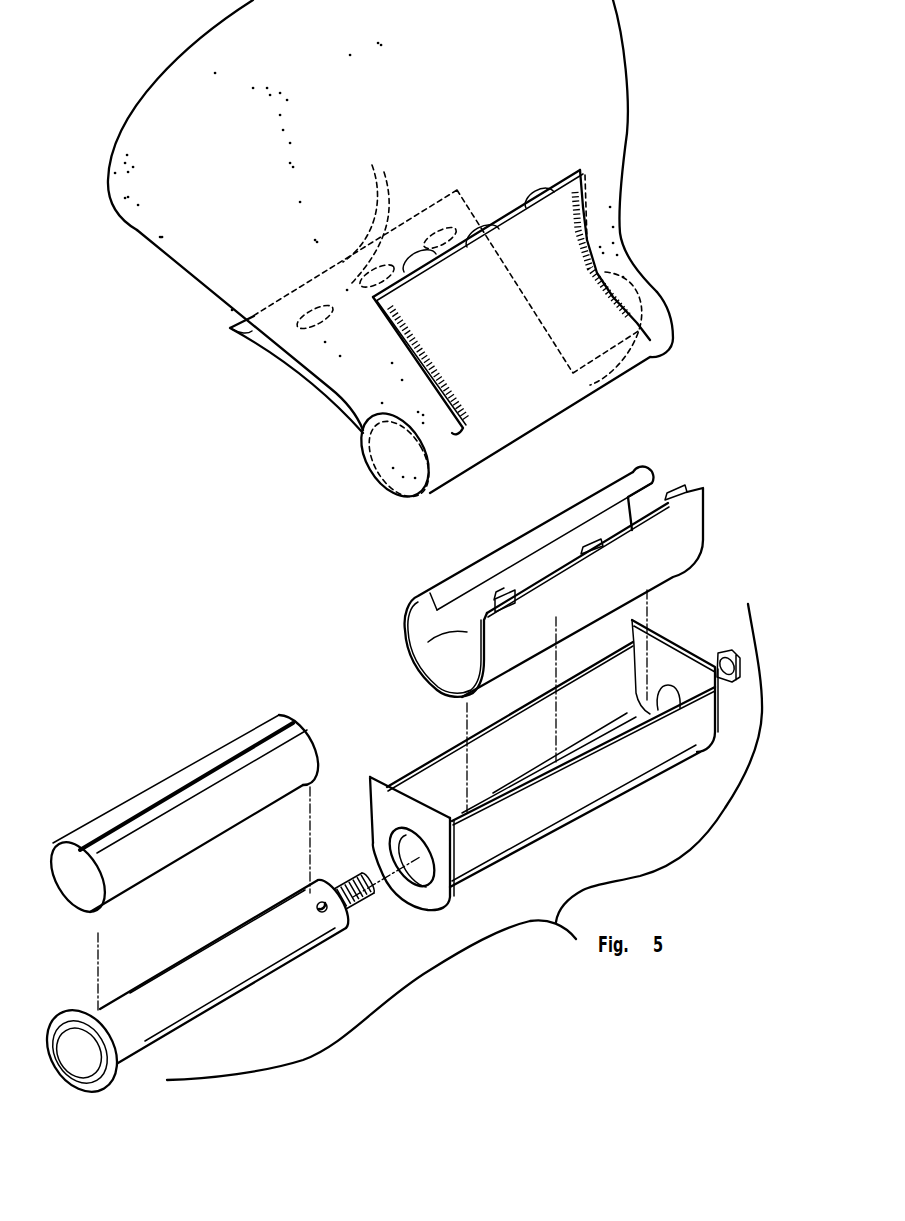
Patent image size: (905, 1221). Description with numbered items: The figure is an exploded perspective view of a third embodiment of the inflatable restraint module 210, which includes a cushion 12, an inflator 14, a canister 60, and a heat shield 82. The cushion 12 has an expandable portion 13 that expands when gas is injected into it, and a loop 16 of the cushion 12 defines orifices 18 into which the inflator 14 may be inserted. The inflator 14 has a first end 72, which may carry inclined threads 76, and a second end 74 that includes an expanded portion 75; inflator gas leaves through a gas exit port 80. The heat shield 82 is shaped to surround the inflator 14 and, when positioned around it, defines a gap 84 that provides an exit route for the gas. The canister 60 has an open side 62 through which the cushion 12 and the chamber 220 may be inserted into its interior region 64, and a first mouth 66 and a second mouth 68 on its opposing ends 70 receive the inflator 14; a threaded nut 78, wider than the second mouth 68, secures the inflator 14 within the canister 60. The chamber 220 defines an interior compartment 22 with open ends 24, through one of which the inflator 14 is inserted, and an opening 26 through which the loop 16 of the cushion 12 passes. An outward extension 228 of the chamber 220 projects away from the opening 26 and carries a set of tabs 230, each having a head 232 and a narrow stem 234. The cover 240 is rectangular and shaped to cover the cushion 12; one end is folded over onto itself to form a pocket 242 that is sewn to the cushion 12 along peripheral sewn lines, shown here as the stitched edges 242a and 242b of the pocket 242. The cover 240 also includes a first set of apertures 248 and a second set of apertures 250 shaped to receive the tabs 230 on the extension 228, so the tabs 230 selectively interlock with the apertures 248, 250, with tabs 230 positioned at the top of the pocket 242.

The cushion 12 is at (150, 134).
The expandable portion 13 is at (207, 263).
The inflator 14 is at (184, 976).
The loop 16 is at (674, 343).
The orifices 18 is at (397, 452).
The interior compartment 22 is at (410, 653).
The open ends 24 is at (446, 679).
The opening 26 is at (470, 600).
The canister 60 is at (581, 801).
The open side 62 is at (623, 727).
The interior region 64 is at (477, 822).
The first mouth 66 is at (370, 808).
The second mouth 68 is at (669, 690).
The opposing ends 70 is at (717, 710).
The first end 72 is at (383, 898).
The second end 74 is at (68, 1060).
The expanded portion 75 is at (67, 1017).
The inclined threads 76 is at (360, 878).
The threaded nut 78 is at (728, 652).
The gas exit port 80 is at (322, 913).
The heat shield 82 is at (80, 887).
The gap 84 is at (170, 797).
The inflatable restraint module 210 is at (185, 532).
The chamber 220 is at (405, 602).
The outward extension 228 is at (700, 537).
The tabs 230 is at (677, 499).
The head 232 is at (512, 590).
The narrow stem 234 is at (502, 613).
The cover 240 is at (230, 330).
The pocket 242 is at (447, 500).
The zipper left 242a is at (438, 380).
The zipper right 242b is at (582, 242).
The first set of apertures 248 is at (560, 185).
The second set of apertures 250 is at (390, 187).